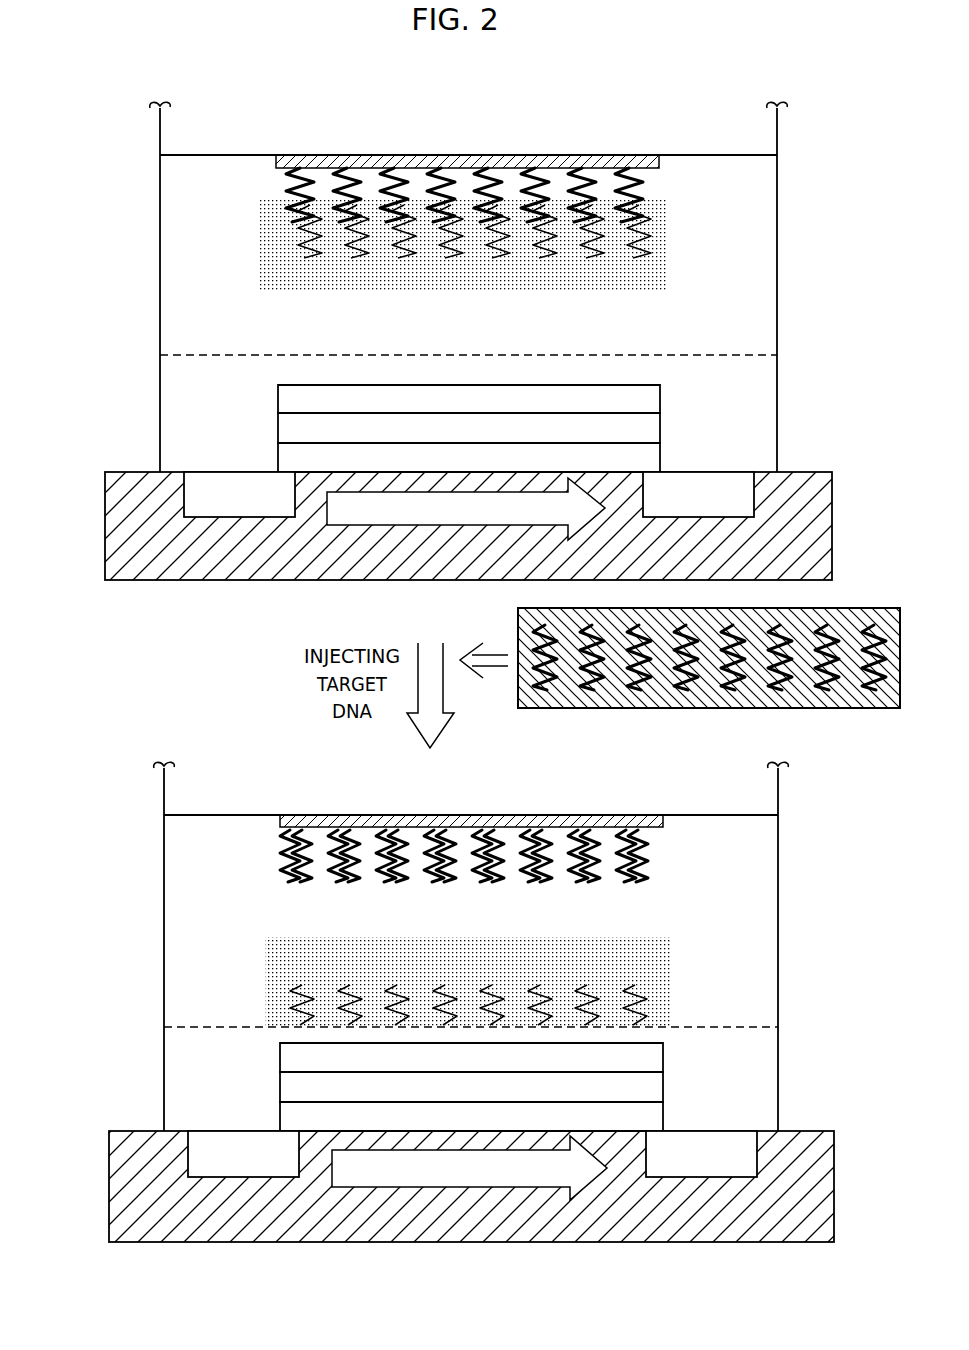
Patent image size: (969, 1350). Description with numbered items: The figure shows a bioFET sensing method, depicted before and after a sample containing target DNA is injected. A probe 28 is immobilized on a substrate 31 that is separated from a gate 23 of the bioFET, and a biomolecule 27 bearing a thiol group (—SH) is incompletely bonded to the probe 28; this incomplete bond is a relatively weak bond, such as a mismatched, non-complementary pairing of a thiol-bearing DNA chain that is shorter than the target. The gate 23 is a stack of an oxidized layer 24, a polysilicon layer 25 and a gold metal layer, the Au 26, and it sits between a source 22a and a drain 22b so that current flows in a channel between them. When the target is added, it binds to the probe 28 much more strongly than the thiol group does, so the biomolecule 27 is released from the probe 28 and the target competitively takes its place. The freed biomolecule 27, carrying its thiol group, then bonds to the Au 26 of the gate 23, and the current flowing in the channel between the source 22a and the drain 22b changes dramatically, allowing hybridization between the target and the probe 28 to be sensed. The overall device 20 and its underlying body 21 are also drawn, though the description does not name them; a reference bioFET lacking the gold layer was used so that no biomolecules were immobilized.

The biosensor / detection chamber 20 is at (751, 245).
The substrate 21 is at (472, 857).
The source 22a is at (184, 498).
The drain 22b is at (754, 497).
The gate 23 is at (522, 758).
The oxidized layer 24 is at (500, 787).
The polysilicon layer 25 is at (660, 430).
The Au 26 is at (660, 402).
The biomolecule 27 is at (650, 228).
The probe 28 is at (645, 178).
The substrate 31 is at (612, 155).